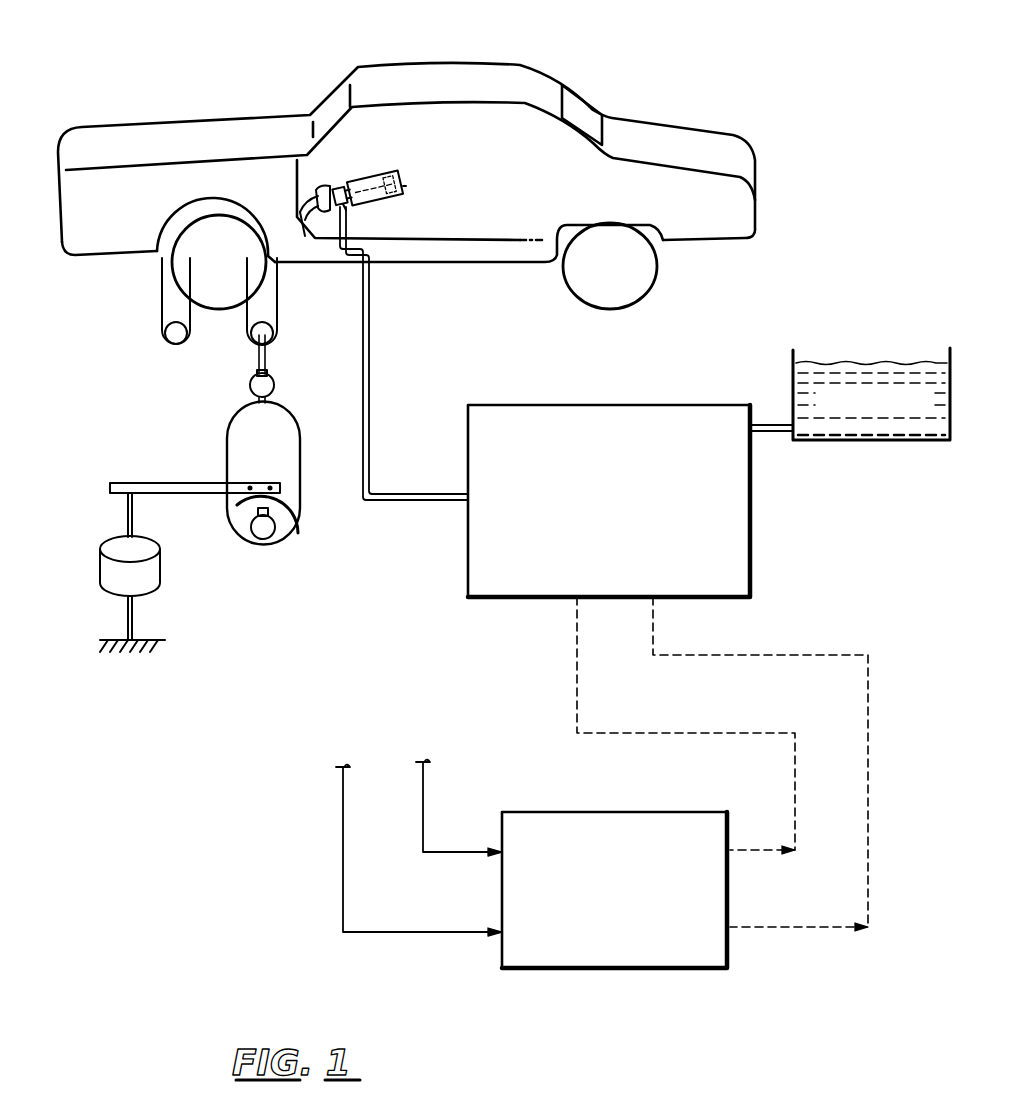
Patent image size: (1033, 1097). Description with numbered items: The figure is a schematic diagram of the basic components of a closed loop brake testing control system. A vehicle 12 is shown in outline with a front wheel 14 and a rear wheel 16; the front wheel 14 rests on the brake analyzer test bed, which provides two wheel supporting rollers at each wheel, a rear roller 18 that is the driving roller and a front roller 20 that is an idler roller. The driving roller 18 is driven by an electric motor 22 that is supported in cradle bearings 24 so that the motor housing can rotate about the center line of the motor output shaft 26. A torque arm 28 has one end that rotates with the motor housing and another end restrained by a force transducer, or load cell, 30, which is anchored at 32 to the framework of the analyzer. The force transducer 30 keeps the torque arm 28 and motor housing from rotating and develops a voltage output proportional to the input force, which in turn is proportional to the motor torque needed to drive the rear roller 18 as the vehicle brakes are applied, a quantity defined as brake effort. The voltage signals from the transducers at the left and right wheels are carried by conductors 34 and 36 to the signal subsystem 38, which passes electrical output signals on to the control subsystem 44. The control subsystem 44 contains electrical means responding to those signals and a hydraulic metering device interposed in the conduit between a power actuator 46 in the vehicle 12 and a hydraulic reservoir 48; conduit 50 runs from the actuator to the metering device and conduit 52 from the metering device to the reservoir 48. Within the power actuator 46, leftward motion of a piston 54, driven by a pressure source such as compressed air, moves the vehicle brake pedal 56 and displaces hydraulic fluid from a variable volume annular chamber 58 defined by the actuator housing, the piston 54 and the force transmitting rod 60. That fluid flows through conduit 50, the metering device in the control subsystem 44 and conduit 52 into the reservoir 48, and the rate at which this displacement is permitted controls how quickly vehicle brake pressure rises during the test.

The vehicle 12 is at (383, 66).
The front wheel 14 is at (190, 272).
The rear wheel 16 is at (642, 283).
The rear roller 18 is at (277, 338).
The front roller 20 is at (172, 338).
The electric motor 22 is at (300, 460).
The cradle bearings 24 is at (275, 386).
The motor output shaft 26 is at (259, 358).
The torque arm 28 is at (190, 483).
The force transducer 30 is at (160, 572).
The anchor 32 is at (160, 636).
The conductor 34 is at (343, 808).
The conductor 36 is at (423, 792).
The signal subsystem 38 is at (640, 812).
The control subsystem 44 is at (660, 405).
The power actuator 46 is at (380, 204).
The hydraulic reservoir 48 is at (868, 362).
The hydraulic conduit 50 is at (366, 412).
The hydraulic conduit 52 is at (768, 425).
The piston 54 is at (405, 187).
The brake pedal 56 is at (318, 198).
The annular chamber 58 is at (352, 183).
The force transmitting rod 60 is at (385, 172).